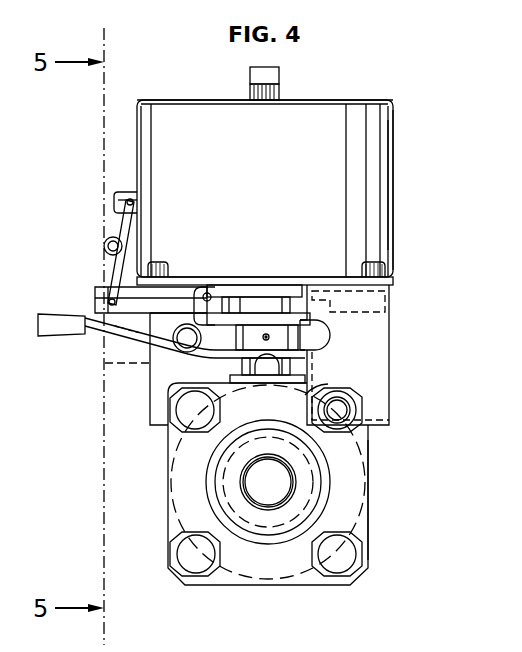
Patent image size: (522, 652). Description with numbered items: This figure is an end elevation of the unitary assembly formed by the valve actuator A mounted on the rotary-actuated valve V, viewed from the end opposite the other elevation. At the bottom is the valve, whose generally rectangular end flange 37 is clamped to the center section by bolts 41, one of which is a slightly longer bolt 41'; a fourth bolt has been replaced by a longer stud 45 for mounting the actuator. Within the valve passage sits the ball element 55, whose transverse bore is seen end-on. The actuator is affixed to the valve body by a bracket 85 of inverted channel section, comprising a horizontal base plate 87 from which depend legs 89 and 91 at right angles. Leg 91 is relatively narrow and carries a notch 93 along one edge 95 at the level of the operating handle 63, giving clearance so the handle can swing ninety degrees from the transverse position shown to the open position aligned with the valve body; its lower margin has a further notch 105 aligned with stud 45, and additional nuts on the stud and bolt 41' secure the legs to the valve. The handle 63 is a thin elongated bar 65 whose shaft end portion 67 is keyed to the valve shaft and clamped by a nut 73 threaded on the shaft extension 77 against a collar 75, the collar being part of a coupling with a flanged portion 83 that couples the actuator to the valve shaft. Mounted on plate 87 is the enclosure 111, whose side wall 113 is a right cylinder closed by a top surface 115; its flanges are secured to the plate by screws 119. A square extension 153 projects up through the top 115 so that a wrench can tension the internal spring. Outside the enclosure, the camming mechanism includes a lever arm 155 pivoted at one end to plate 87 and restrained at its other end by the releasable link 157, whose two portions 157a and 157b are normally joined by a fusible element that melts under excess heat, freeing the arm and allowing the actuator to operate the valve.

The side wall 113 is at (167, 128).
The enclosure 111 is at (394, 136).
The top surface 115 is at (188, 96).
The extension 153 is at (282, 68).
The screws 119 is at (158, 262).
The releasable link 157 is at (114, 258).
The link portion 157a is at (112, 280).
The link portion 157b is at (118, 224).
The lever arm 155 is at (97, 294).
The operating handle 63 is at (128, 338).
The elongated bar 65 is at (180, 360).
The shaft end portion 67 is at (203, 338).
The leg 89 is at (150, 381).
The flanged portion 83 is at (200, 290).
The base plate 87 is at (212, 296).
The collar 75 is at (259, 336).
The shaft extension 77 is at (269, 334).
The nut 73 is at (242, 374).
The leg 91 is at (373, 362).
The bracket 85 is at (392, 296).
The notch 93 is at (323, 336).
The notch 105 is at (382, 411).
The stud 45 is at (356, 398).
The edge 95 is at (306, 394).
The end flange 37 is at (168, 505).
The ball element 55 is at (268, 487).
The bolts 41 is at (264, 570).
The bolt 41' is at (172, 422).
The valve actuator A is at (395, 180).
The valve V is at (372, 548).